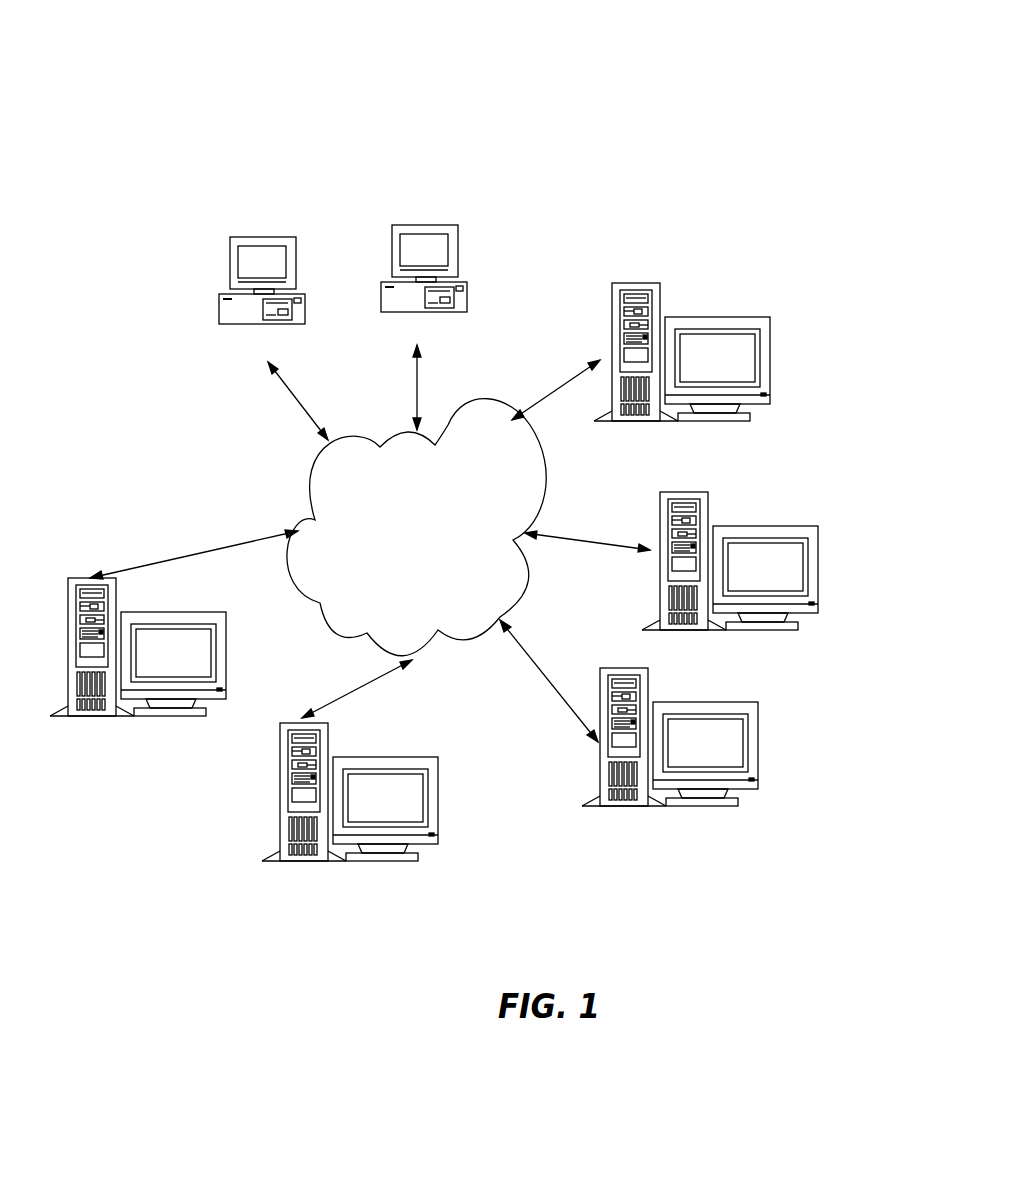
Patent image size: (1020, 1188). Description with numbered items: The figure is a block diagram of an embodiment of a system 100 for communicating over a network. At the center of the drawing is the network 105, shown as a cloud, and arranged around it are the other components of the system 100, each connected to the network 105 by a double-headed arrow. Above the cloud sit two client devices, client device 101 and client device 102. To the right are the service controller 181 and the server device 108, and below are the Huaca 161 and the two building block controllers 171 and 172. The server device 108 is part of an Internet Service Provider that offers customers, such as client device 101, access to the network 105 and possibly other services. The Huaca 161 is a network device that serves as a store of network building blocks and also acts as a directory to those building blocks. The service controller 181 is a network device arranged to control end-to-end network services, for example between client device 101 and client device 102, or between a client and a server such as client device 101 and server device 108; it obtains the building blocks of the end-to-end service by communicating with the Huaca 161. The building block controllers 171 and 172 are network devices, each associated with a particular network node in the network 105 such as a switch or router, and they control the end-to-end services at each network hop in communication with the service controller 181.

The system 100 is at (512, 73).
The client device 101 is at (307, 300).
The client device 102 is at (468, 287).
The network 105 is at (490, 397).
The server device 108 is at (817, 563).
The Huaca 161 is at (757, 742).
The building block controller 171 is at (227, 650).
The building block controller 172 is at (437, 795).
The service controller 181 is at (770, 353).